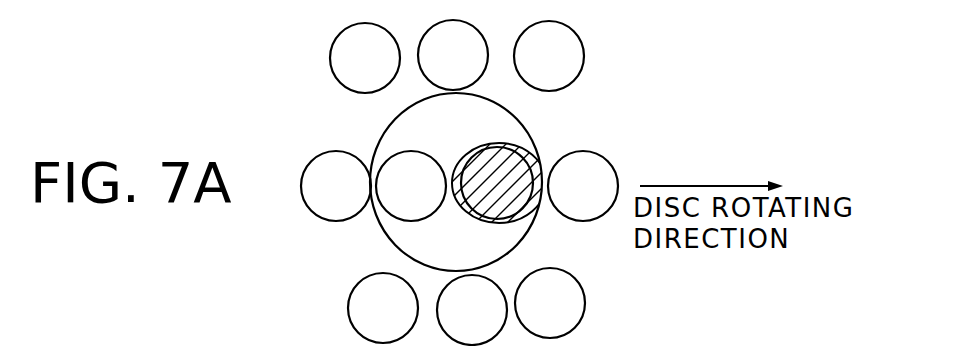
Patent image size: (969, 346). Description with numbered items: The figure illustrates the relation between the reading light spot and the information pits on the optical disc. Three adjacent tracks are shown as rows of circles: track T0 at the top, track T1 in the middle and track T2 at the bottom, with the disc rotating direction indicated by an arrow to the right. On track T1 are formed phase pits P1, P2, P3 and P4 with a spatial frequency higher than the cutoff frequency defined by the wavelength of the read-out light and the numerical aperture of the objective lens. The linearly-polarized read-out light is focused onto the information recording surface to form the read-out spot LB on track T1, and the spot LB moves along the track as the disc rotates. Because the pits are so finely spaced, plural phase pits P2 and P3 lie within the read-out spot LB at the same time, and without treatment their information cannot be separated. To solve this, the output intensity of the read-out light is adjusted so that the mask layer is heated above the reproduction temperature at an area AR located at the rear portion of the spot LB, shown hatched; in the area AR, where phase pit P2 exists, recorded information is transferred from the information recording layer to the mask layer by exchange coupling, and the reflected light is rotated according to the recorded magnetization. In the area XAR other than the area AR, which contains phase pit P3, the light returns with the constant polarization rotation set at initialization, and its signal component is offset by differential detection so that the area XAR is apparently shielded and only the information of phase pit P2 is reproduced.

The read-out spot LB is at (519, 124).
The area AR is at (541, 203).
The area other than the area AR XAR is at (404, 232).
The phase pit P1 is at (609, 156).
The phase pit P2 is at (493, 210).
The phase pit P3 is at (407, 151).
The phase pit P4 is at (337, 152).
The track T0 is at (427, 56).
The track T1 is at (472, 160).
The track T2 is at (431, 306).